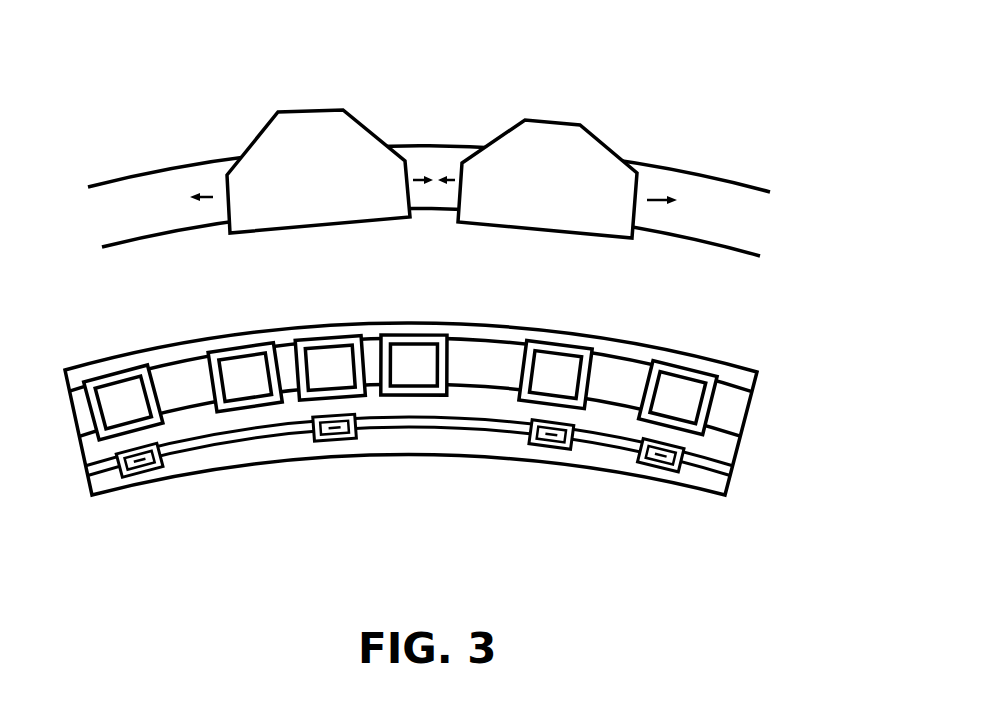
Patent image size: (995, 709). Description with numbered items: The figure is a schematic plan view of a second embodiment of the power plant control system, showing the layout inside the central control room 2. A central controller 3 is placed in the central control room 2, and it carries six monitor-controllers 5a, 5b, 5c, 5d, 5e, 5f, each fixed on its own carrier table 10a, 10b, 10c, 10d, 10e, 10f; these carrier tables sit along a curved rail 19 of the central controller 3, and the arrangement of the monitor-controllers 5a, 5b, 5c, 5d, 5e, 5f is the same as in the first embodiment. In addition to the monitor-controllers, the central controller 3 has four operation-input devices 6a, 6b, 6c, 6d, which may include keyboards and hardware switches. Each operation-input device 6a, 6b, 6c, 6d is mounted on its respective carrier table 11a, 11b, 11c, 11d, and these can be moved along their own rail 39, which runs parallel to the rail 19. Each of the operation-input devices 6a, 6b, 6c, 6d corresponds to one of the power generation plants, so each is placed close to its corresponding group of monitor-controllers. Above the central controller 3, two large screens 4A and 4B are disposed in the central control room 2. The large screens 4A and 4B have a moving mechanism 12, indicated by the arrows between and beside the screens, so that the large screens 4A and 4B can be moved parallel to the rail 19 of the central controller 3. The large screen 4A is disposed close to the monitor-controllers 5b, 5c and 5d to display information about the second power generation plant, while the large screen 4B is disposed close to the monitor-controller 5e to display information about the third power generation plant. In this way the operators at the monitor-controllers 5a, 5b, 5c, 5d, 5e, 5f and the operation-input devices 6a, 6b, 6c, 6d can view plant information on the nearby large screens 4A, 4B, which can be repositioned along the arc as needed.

The central control room 2 is at (812, 129).
The central controller 3 is at (768, 377).
The large screen 4A is at (312, 110).
The large screen 4B is at (555, 124).
The moving mechanism 12 is at (438, 147).
The rail 19 is at (741, 407).
The rail 39 is at (724, 472).
The monitor-controller 5a is at (147, 380).
The monitor-controller 5b is at (247, 365).
The monitor-controller 5c is at (332, 357).
The monitor-controller 5d is at (413, 352).
The monitor-controller 5e is at (555, 363).
The monitor-controller 5f is at (673, 374).
The carrier table 10a is at (112, 370).
The carrier table 10b is at (270, 355).
The carrier table 10c is at (352, 350).
The carrier table 10d is at (447, 340).
The carrier table 10e is at (593, 345).
The carrier table 10f is at (723, 358).
The operation-input device 6a is at (137, 474).
The operation-input device 6b is at (327, 442).
The operation-input device 6c is at (542, 450).
The operation-input device 6d is at (657, 468).
The carrier table 11a is at (153, 473).
The carrier table 11b is at (350, 444).
The carrier table 11c is at (573, 450).
The carrier table 11d is at (680, 472).